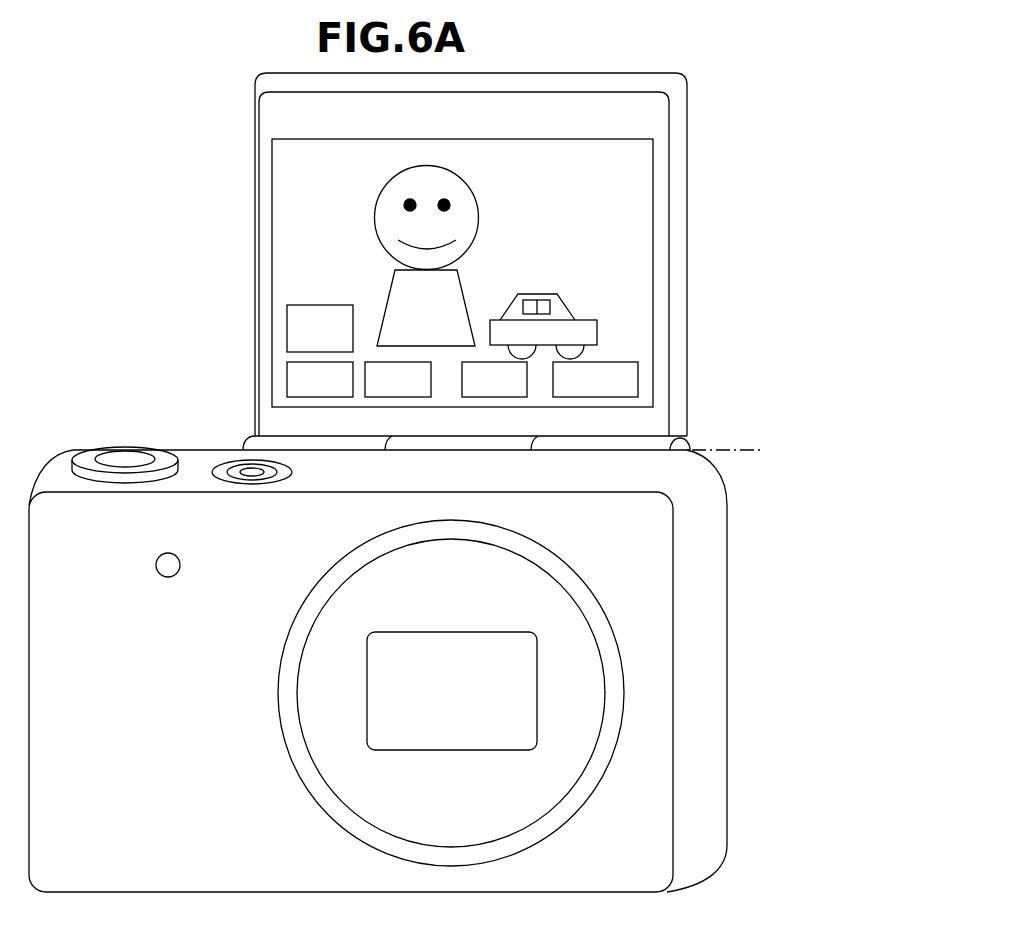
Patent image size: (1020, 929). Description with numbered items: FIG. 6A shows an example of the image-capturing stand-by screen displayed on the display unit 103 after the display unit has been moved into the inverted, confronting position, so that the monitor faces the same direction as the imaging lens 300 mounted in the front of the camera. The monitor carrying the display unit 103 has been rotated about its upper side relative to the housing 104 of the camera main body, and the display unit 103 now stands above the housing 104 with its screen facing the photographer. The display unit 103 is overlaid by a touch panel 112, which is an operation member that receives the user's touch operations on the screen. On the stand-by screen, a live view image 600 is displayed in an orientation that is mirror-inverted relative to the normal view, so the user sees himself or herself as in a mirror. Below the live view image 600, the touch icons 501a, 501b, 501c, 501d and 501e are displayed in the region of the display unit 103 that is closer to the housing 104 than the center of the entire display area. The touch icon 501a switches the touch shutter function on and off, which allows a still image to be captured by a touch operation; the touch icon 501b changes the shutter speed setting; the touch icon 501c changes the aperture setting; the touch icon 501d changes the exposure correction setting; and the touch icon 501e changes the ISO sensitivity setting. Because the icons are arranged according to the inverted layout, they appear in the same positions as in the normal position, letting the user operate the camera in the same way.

The housing 104 is at (706, 527).
The imaging lens 300 is at (560, 688).
The display unit 103 is at (406, 261).
The touch panel 112 is at (272, 170).
The live view image 600 is at (290, 226).
The touch icon 501a is at (287, 330).
The touch icon 501b is at (287, 380).
The touch icon 501c is at (397, 397).
The touch icon 501d is at (497, 397).
The touch icon 501e is at (640, 380).